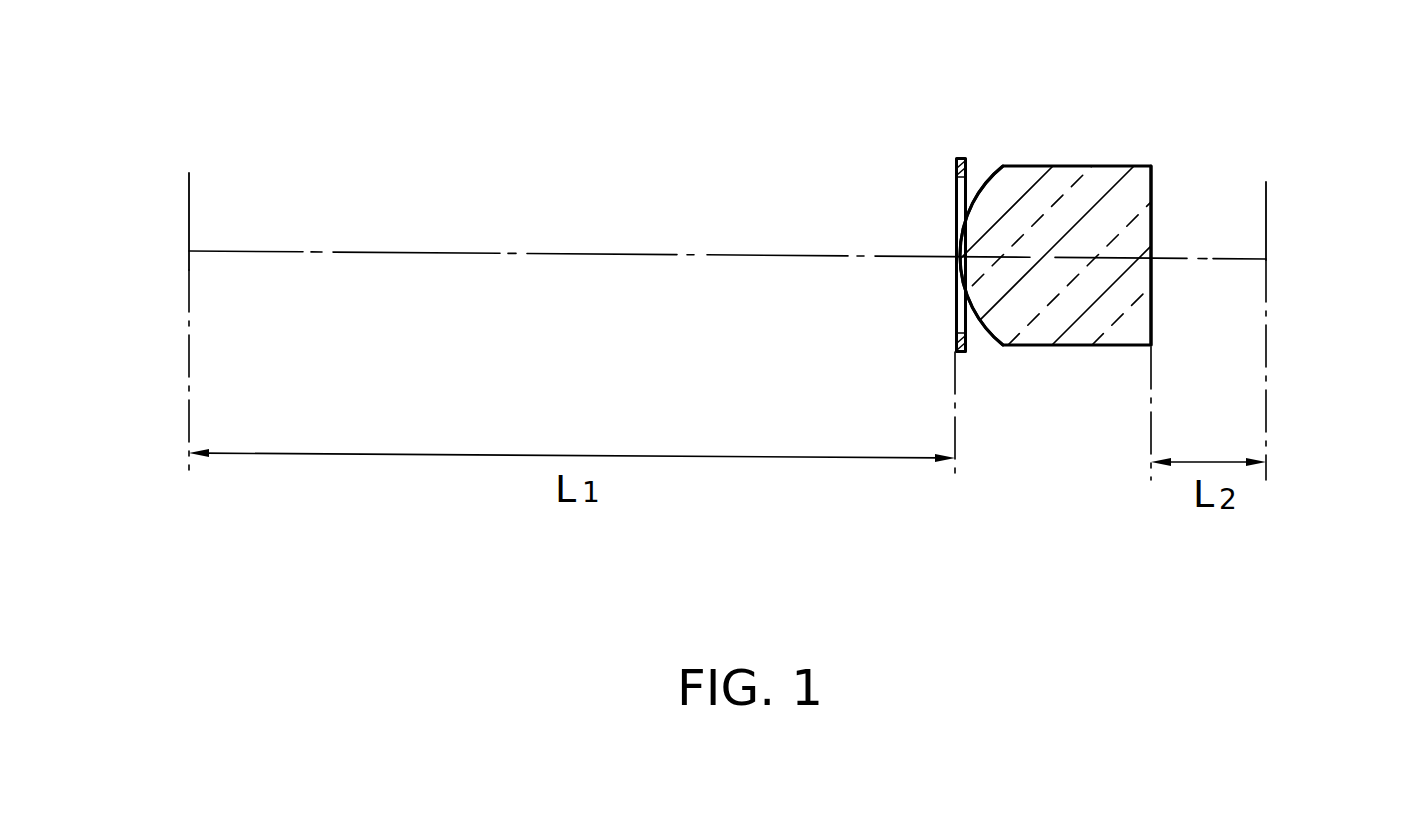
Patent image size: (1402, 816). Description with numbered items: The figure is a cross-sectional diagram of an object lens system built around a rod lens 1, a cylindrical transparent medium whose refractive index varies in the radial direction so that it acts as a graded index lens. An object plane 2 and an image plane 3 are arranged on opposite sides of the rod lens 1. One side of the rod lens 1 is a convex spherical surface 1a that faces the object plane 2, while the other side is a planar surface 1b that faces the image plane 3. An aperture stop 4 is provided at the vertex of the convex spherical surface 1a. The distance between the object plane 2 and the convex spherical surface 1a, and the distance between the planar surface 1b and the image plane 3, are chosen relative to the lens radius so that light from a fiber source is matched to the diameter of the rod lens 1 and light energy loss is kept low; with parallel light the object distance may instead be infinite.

The rod lens 1 is at (1105, 192).
The convex spherical surface 1a is at (986, 180).
The planar surface 1b is at (1151, 202).
The object plane 2 is at (188, 268).
The image plane 3 is at (1266, 217).
The aperture stop 4 is at (955, 167).